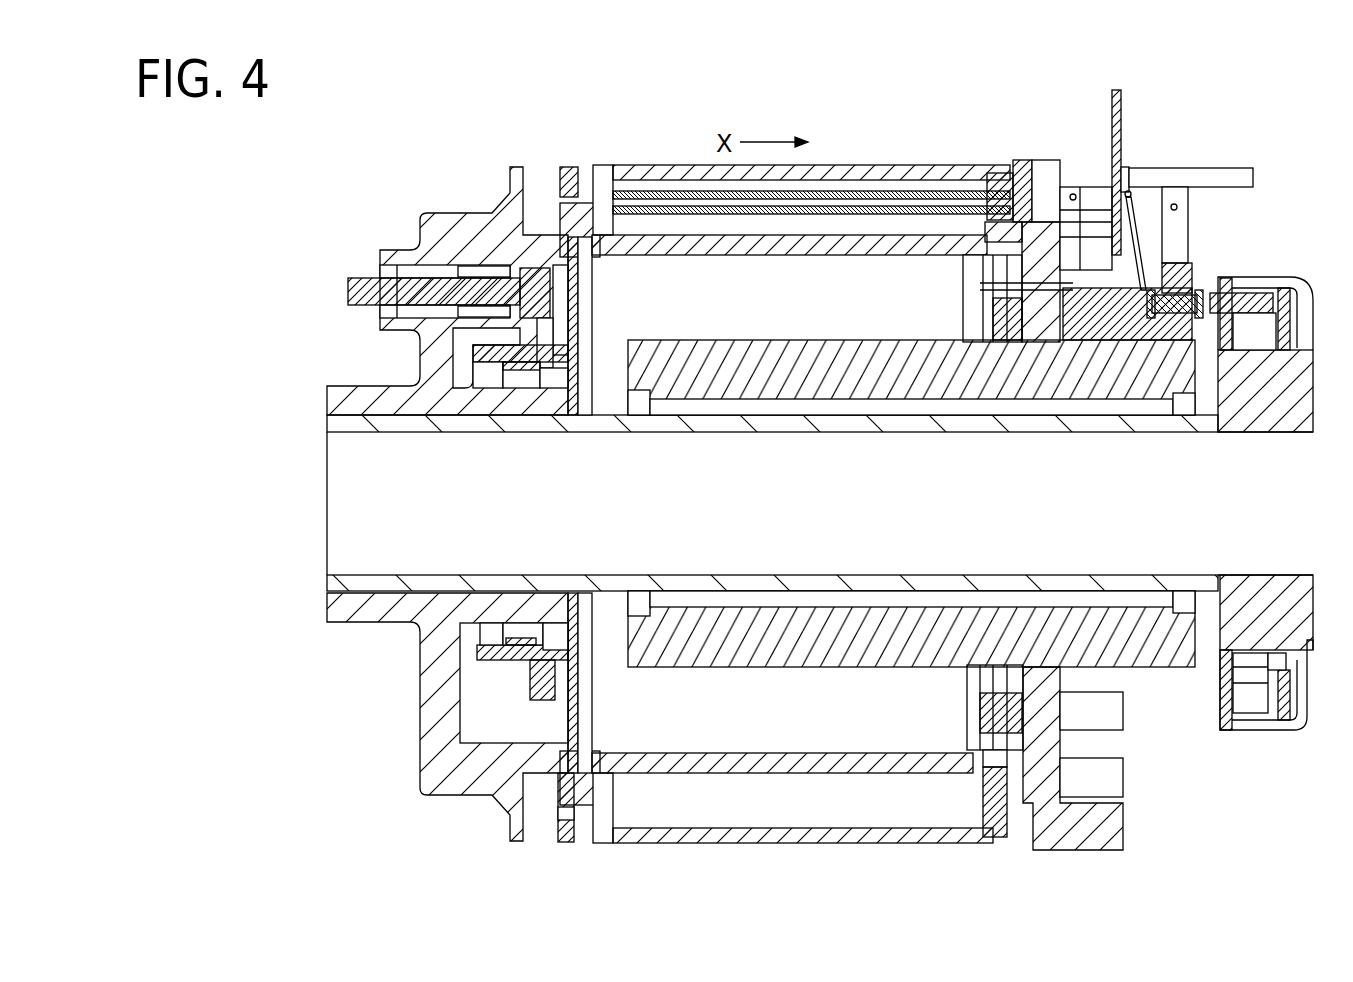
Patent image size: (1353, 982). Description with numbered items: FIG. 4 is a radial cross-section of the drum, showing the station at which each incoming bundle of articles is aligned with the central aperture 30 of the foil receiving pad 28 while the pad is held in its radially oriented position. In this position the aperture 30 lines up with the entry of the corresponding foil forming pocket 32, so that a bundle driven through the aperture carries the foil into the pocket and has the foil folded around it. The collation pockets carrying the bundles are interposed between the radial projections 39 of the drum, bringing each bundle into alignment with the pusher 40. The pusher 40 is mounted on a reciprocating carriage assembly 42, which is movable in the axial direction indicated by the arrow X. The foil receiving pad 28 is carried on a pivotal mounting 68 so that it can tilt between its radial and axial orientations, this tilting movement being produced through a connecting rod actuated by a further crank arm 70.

The foil receiving pad 28 is at (1122, 112).
The central aperture 30 is at (1126, 185).
The foil forming pocket 32 is at (1238, 168).
The radial projections 39 is at (1123, 782).
The pusher 40 is at (1015, 170).
The reciprocating carriage assembly 42 is at (895, 192).
The pivotal mounting 68 is at (1090, 197).
The crank arm 70 is at (1140, 243).